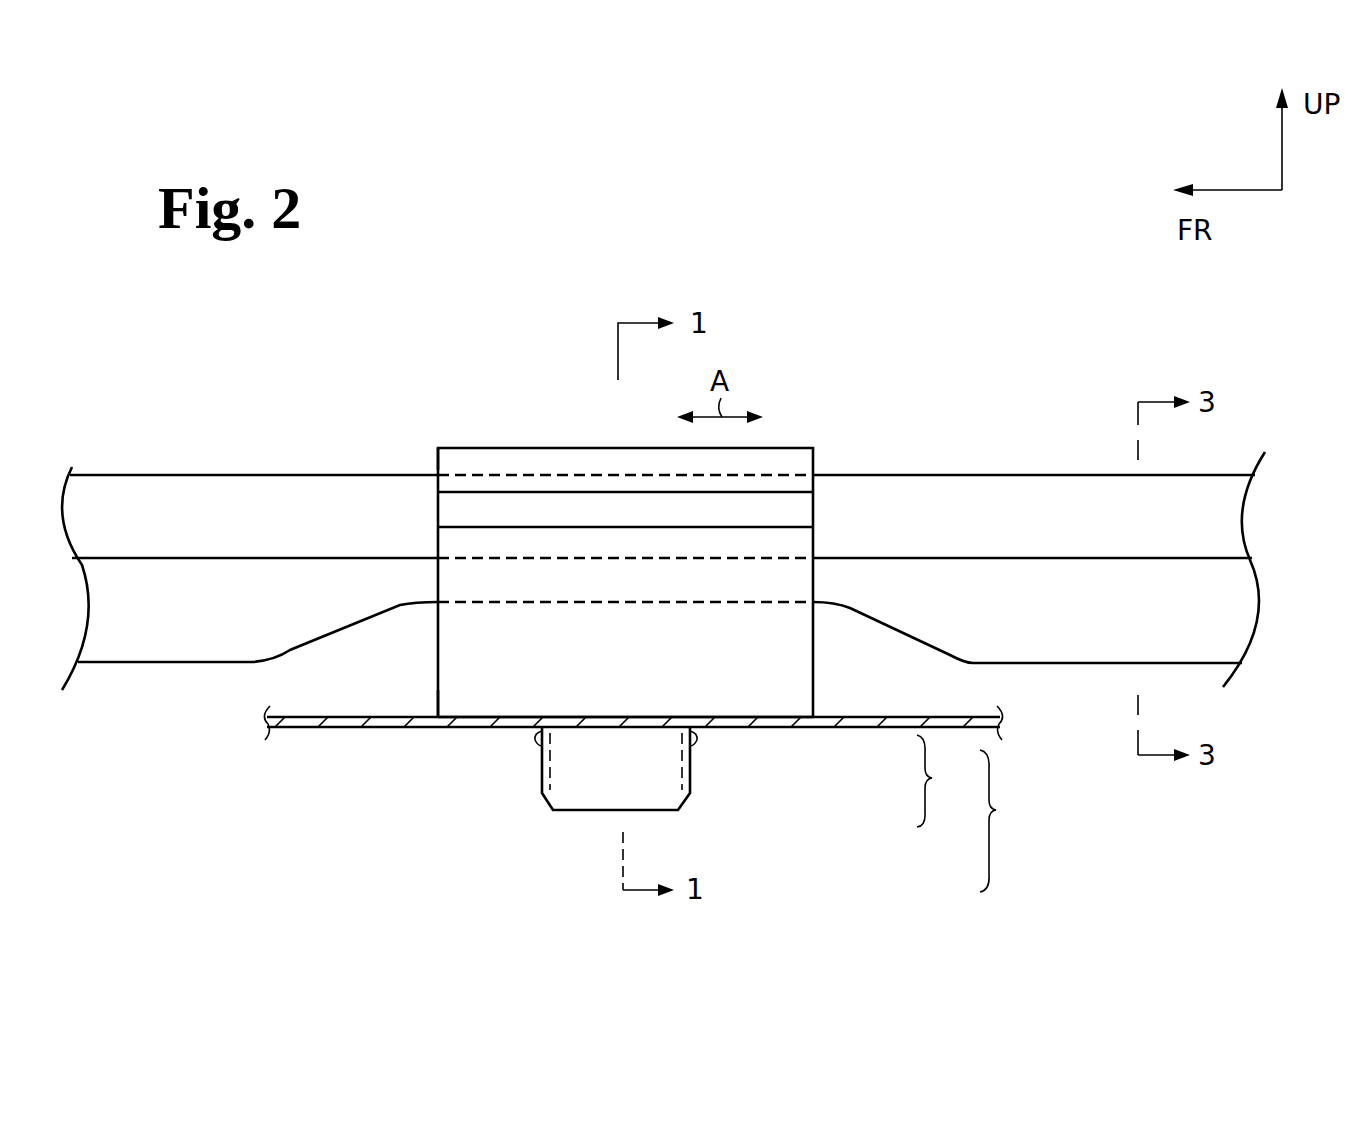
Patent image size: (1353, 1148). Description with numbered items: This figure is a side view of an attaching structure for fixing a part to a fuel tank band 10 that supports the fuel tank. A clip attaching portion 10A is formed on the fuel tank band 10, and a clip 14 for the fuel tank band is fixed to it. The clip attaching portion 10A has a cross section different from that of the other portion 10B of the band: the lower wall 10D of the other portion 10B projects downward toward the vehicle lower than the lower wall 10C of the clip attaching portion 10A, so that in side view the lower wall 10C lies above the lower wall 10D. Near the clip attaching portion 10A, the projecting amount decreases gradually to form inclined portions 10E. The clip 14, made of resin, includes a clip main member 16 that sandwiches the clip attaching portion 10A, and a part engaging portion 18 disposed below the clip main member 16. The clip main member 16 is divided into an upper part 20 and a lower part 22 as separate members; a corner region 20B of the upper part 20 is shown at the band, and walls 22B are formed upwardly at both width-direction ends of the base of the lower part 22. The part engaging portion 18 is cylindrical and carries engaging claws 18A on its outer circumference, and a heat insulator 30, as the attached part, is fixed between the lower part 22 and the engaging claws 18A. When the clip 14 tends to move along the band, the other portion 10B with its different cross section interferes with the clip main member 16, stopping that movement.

The fuel tank band 10 is at (1075, 475).
The clip attaching portion 10A is at (575, 476).
The other portion 10B is at (325, 474).
The lower wall of the clip attaching portion 10C is at (650, 603).
The lower wall of the other portion 10D is at (152, 666).
The inclined portions 10E is at (343, 623).
The clip for the fuel tank band 14 is at (810, 388).
The clip main member 16 is at (946, 781).
The part engaging portion 18 is at (699, 789).
The engaging claws 18A is at (537, 742).
The upper part 20 is at (820, 460).
The upper bent portion of bracket 20B is at (460, 486).
The lower part 22 is at (776, 720).
The walls 22B is at (438, 691).
The heat insulator 30 is at (340, 728).